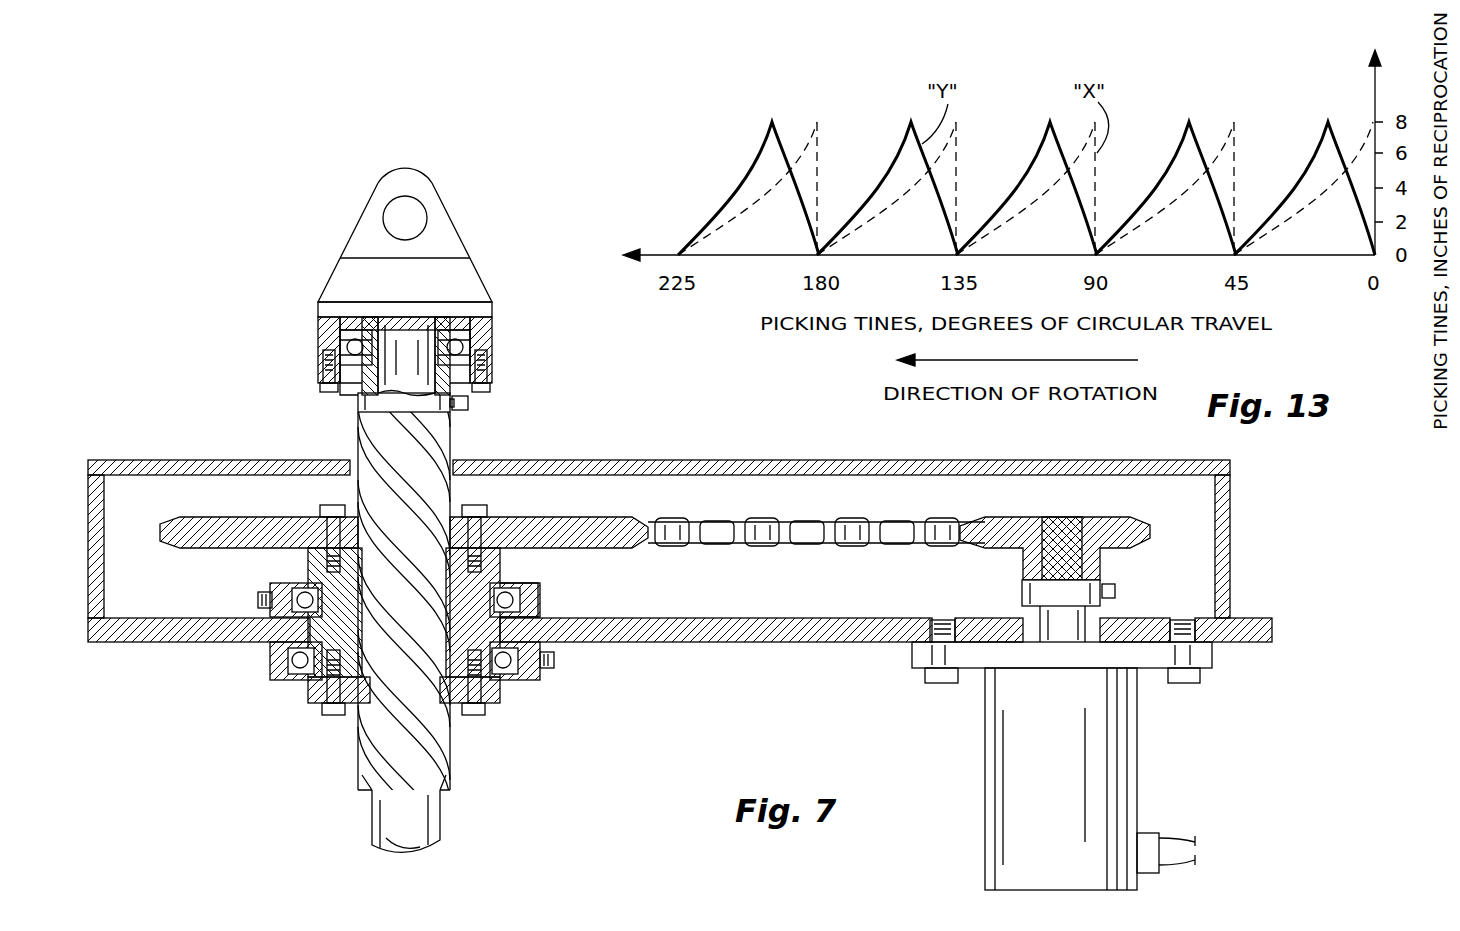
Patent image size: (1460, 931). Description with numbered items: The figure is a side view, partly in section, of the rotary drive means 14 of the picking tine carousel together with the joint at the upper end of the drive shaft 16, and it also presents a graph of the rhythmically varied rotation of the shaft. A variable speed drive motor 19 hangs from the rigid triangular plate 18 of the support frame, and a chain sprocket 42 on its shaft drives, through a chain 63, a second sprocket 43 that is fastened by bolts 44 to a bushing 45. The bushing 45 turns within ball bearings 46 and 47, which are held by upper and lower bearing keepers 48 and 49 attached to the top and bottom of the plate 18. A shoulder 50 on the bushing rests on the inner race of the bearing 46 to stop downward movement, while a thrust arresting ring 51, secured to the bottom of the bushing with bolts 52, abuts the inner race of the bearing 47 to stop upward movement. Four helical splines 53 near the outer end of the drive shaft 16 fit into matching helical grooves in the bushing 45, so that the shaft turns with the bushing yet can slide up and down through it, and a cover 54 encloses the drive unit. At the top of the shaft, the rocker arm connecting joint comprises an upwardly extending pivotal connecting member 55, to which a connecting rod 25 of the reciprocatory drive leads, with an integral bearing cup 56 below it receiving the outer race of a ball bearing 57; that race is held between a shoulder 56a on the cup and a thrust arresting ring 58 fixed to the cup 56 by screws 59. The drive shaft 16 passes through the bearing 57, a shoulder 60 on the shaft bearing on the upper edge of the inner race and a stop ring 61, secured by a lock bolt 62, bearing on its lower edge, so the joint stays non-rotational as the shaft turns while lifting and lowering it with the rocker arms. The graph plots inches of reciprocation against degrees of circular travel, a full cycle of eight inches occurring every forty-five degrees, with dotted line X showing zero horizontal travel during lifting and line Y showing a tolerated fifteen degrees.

The rotary drive means 14 is at (72, 483).
The drive shaft 16 is at (410, 822).
The rigid triangular plate 18 is at (698, 627).
The variable speed drive motor 19 is at (1112, 793).
The connecting rod 25 is at (320, 222).
The chain sprocket 42 is at (1118, 520).
The second sprocket 43 is at (582, 522).
The bolts 44 is at (330, 512).
The bushing 45 is at (500, 568).
The ball bearing 46 is at (298, 585).
The ball bearing 47 is at (292, 683).
The upper bearing keeper 48 is at (522, 605).
The lower bearing keeper 49 is at (538, 666).
The shoulder 50 is at (520, 590).
The thrust arresting ring 51 is at (312, 690).
The bolts 52 is at (342, 712).
The helical splines 53 is at (380, 760).
The cover 54 is at (703, 466).
The pivotal connecting member 55 is at (445, 229).
The bearing cup 56 is at (320, 330).
The shoulder 56a is at (318, 306).
The ball bearing 57 is at (347, 345).
The thrust arresting ring 58 is at (342, 392).
The screws 59 is at (333, 387).
The shoulder 60 is at (440, 322).
The stop ring 61 is at (383, 402).
The lock bolt 62 is at (462, 410).
The chain 63 is at (850, 522).